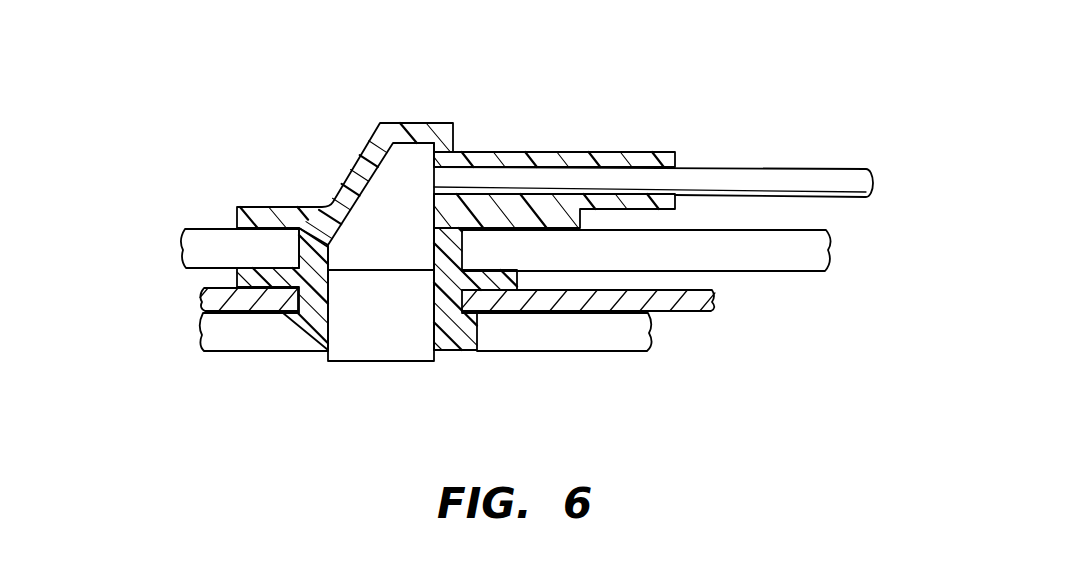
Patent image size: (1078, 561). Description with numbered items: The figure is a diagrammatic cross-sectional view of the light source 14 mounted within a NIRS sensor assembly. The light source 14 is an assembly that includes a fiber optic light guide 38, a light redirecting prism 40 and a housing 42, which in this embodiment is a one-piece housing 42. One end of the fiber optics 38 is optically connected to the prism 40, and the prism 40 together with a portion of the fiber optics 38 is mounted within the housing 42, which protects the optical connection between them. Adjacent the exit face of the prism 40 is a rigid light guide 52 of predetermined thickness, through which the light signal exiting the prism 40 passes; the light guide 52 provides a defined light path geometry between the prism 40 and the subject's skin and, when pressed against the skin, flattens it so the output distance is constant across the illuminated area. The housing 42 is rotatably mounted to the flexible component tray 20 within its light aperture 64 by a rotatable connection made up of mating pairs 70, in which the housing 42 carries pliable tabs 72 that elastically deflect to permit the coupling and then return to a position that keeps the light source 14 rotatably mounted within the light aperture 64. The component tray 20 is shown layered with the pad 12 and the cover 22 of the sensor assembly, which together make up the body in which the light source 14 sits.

The light source 14 is at (565, 68).
The light redirecting prism 40 is at (410, 172).
The housing 42 is at (372, 140).
The fiber optic light guide 38 is at (740, 167).
The cover 22 is at (815, 272).
The component tray 20 is at (710, 313).
The pad 12 is at (645, 352).
The mating pairs 70 is at (288, 330).
The light aperture 64 is at (326, 314).
The light guide 52 is at (420, 363).
The pliable tabs 72 is at (434, 303).